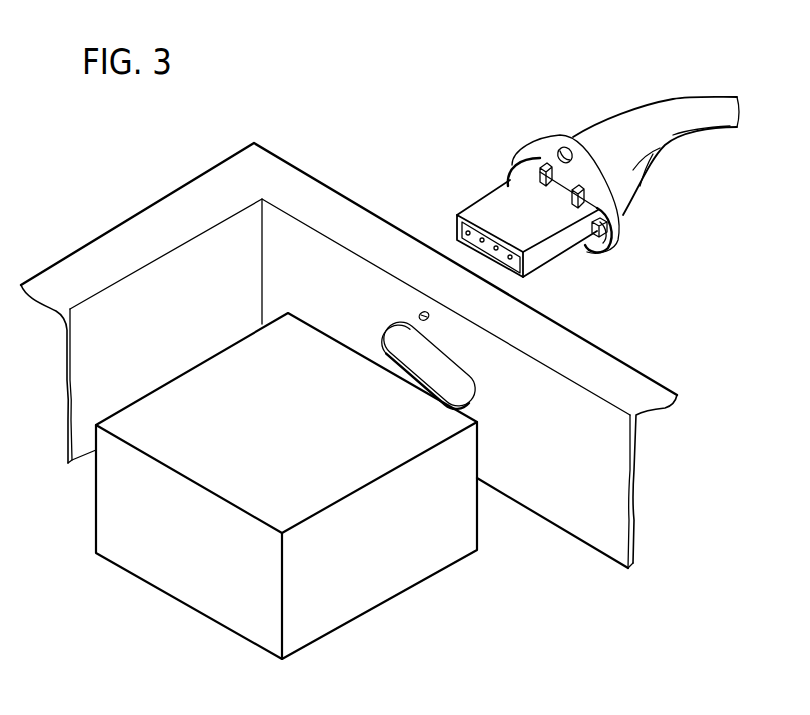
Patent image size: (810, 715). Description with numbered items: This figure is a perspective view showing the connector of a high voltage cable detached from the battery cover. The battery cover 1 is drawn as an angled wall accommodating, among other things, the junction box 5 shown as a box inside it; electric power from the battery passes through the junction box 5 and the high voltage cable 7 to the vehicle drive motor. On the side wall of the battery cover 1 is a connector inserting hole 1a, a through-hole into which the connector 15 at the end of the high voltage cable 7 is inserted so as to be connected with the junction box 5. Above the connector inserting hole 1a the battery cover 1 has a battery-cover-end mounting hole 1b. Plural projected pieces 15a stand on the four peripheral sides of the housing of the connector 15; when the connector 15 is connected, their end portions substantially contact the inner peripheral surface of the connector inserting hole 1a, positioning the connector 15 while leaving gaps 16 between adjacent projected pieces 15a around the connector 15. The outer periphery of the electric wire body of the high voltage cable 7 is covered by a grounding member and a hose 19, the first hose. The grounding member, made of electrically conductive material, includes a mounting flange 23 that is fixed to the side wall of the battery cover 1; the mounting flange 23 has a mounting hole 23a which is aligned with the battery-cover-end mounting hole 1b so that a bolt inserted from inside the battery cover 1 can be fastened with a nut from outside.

The battery cover 1 is at (128, 232).
The connector inserting hole 1a is at (458, 358).
The battery-cover-end mounting hole 1b is at (421, 311).
The junction box 5 is at (367, 590).
The high voltage cable 7 is at (709, 94).
The connector 15 is at (550, 254).
The projected pieces 15a is at (537, 157).
The gaps 16 is at (585, 232).
The hose 19 is at (678, 113).
The mounting flange 23 is at (585, 173).
The mounting hole 23a is at (565, 148).